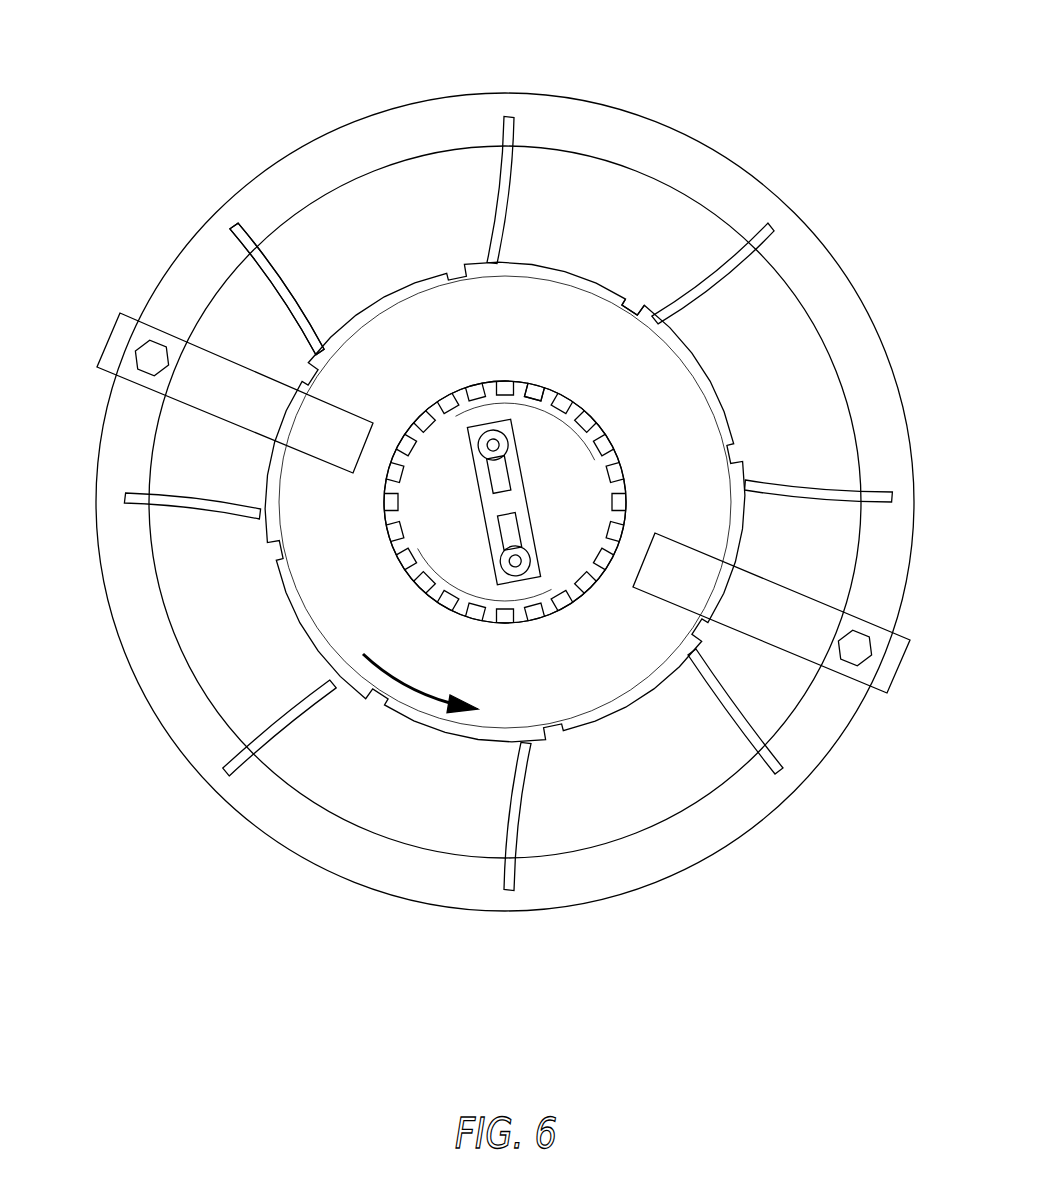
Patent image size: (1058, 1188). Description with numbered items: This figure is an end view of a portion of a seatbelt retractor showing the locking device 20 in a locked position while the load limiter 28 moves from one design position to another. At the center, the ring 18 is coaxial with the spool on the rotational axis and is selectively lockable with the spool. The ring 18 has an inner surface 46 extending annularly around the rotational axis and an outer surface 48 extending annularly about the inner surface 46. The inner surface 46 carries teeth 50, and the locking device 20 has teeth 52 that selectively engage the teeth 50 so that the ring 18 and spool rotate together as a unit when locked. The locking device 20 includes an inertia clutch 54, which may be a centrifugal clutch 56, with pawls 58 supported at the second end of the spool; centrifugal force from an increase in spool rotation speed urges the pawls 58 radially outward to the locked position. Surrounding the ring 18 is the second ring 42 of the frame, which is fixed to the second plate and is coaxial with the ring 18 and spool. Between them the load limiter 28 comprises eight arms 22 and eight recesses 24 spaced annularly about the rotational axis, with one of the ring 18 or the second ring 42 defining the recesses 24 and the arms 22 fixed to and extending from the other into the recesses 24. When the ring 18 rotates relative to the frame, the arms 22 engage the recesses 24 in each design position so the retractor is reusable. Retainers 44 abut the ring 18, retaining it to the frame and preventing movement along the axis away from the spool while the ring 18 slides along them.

The ring 18 is at (632, 367).
The locking device 20 is at (437, 487).
The arm 22 is at (498, 195).
The recess 24 is at (300, 342).
The load limiter 28 is at (574, 268).
The second ring 42 is at (372, 112).
The retainer 44 is at (105, 342).
The inner surface 46 is at (430, 432).
The outer surface 48 is at (612, 292).
The teeth 50 is at (533, 393).
The teeth 52 is at (583, 413).
The inertia clutch 54 is at (548, 548).
The centrifugal clutch 56 is at (504, 502).
The pawl 58 is at (575, 452).